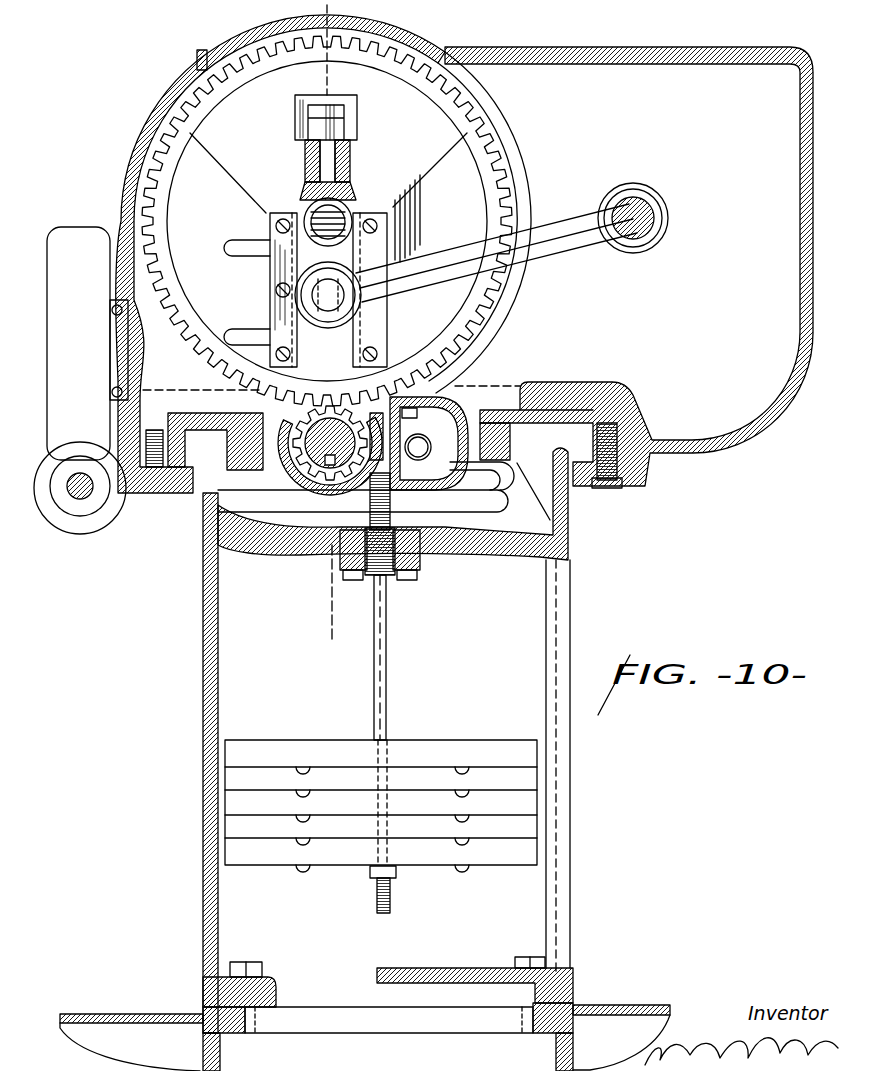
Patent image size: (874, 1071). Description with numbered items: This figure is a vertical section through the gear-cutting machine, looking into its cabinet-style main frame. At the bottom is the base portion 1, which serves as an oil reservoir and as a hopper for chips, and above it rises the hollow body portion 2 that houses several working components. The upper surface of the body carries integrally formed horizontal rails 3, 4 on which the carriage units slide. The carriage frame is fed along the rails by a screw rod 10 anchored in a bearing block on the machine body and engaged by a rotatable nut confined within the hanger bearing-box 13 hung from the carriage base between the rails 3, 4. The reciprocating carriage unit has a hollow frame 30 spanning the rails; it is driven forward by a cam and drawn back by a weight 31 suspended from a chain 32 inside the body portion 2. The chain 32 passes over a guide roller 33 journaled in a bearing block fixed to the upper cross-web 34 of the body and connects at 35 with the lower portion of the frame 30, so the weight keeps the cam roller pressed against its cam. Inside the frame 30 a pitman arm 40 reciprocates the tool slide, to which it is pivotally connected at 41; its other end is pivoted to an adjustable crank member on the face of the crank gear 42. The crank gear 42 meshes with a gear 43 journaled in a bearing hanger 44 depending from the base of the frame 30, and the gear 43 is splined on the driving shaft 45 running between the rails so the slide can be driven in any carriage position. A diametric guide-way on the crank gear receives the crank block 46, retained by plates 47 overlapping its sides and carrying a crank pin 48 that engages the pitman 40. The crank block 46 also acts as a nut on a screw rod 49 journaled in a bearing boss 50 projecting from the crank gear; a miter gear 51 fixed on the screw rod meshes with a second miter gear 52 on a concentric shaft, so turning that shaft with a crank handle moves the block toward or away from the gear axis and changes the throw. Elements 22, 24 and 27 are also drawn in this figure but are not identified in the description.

The base portion 1 is at (578, 1044).
The hollow body portion 2 is at (200, 832).
The horizontal rail 3 is at (204, 441).
The horizontal rail 4 is at (566, 420).
The screw rod 10 is at (427, 450).
The hanger bearing-box 13 is at (452, 478).
The pivot pin of lever 22 is at (80, 478).
The boss 24 is at (102, 525).
The lever 27 is at (87, 343).
The frame of the reciprocating carriage unit 30 is at (722, 428).
The weight 31 is at (437, 742).
The chain 32 is at (388, 672).
The guide roller 33 is at (372, 570).
The upper cross-web 34 is at (492, 550).
The chain connection 35 is at (389, 486).
The pitman arm 40 is at (548, 262).
The pivotal connection of pitman to slide 41 is at (656, 220).
The crank gear 42 is at (514, 195).
The gear 43 is at (330, 455).
The bearing hanger 44 is at (282, 470).
The driving shaft 45 is at (300, 420).
The crank block 46 is at (384, 336).
The plates 47 is at (268, 228).
The crank pin 48 is at (300, 290).
The screw rod 49 is at (320, 355).
The bearing boss 50 is at (350, 165).
The miter gear 51 is at (352, 187).
The miter gear 52 is at (352, 207).